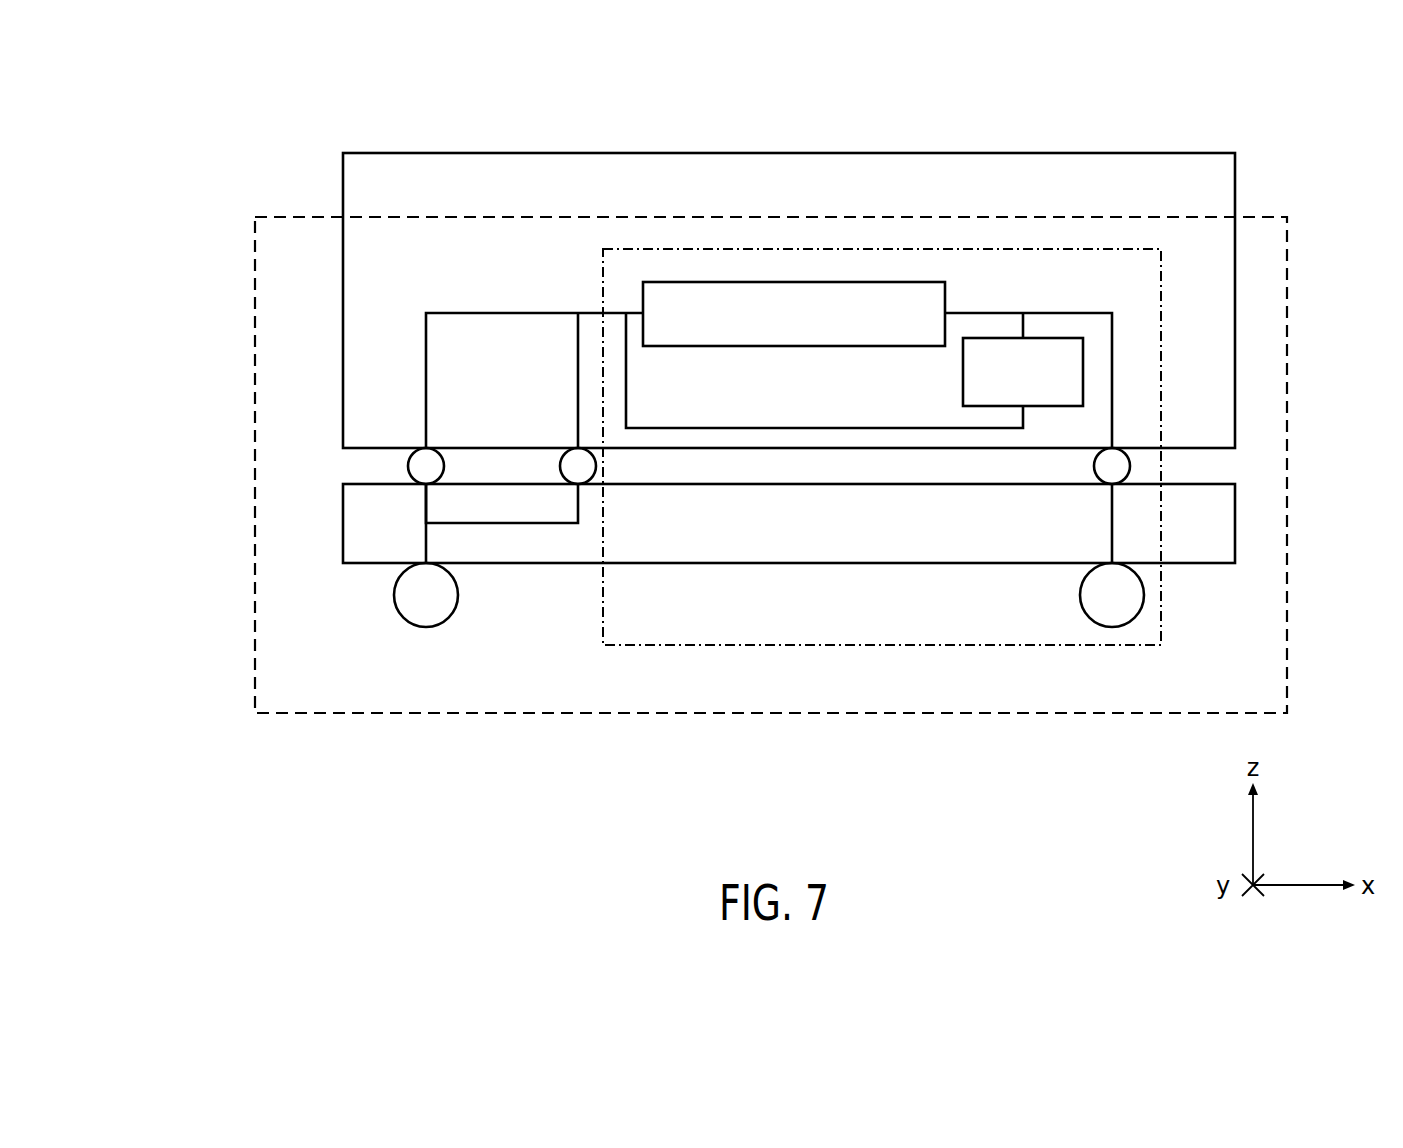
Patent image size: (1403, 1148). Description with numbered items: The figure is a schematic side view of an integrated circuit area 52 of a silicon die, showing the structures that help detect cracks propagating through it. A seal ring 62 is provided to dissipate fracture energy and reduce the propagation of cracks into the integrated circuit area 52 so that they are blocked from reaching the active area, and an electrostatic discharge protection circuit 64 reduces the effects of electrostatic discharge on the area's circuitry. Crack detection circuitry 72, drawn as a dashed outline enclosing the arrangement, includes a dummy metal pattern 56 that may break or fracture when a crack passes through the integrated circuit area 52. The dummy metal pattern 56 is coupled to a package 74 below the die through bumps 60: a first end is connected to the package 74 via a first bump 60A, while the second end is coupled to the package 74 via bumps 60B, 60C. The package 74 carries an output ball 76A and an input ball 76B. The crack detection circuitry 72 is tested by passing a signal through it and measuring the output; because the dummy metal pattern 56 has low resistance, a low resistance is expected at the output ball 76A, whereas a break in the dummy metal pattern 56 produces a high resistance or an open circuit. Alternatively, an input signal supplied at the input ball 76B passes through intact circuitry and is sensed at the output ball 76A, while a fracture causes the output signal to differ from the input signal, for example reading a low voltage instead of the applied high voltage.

The integrated circuit area 52 is at (751, 152).
The dummy metal pattern 56 is at (788, 347).
The bumps 60 is at (481, 114).
The first bump 60A is at (1094, 463).
The bump 60B is at (560, 465).
The bump 60C is at (408, 466).
The seal ring 62 is at (425, 357).
The electrostatic discharge (ESD) protection circuit 64 is at (962, 373).
The crack detection circuitry 72 is at (296, 279).
The package 74 is at (812, 564).
The output ball 76A is at (1084, 614).
The input ball 76B is at (403, 615).